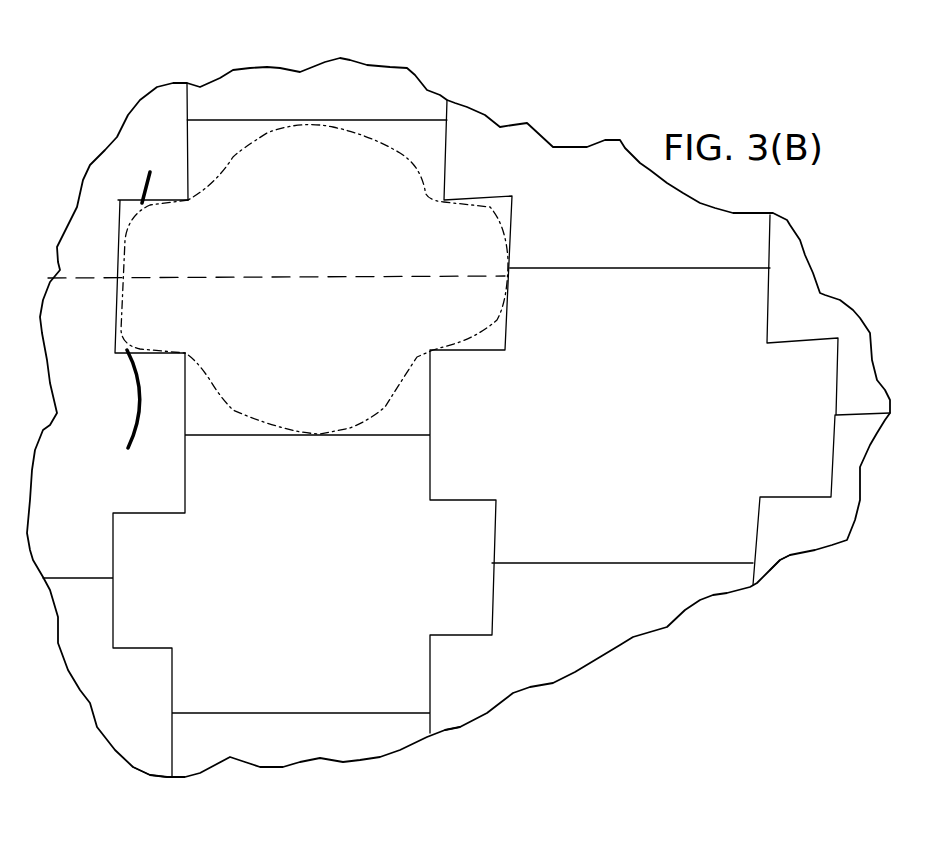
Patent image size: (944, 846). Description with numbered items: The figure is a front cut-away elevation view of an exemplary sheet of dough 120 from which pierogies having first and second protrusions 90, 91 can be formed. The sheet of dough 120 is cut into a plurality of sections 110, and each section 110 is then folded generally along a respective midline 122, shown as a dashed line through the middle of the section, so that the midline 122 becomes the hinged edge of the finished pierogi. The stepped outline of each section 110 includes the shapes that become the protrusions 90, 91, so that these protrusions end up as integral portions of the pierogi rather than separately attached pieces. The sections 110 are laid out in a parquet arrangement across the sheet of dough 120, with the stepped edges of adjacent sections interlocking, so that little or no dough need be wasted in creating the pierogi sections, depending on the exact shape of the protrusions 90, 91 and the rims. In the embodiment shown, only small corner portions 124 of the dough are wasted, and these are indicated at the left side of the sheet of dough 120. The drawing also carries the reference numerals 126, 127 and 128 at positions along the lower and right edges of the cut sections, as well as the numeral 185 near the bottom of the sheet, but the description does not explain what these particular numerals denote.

The first protrusion 90 is at (495, 247).
The second protrusion 91 is at (153, 247).
The section 110 is at (510, 178).
The sheet of dough 120 is at (667, 649).
The midline 122 is at (290, 290).
The corner portion 124 is at (195, 161).
The lower-left region 126 is at (160, 753).
The right region 127 is at (804, 601).
The lower region 128 is at (464, 762).
The label 185 is at (744, 837).